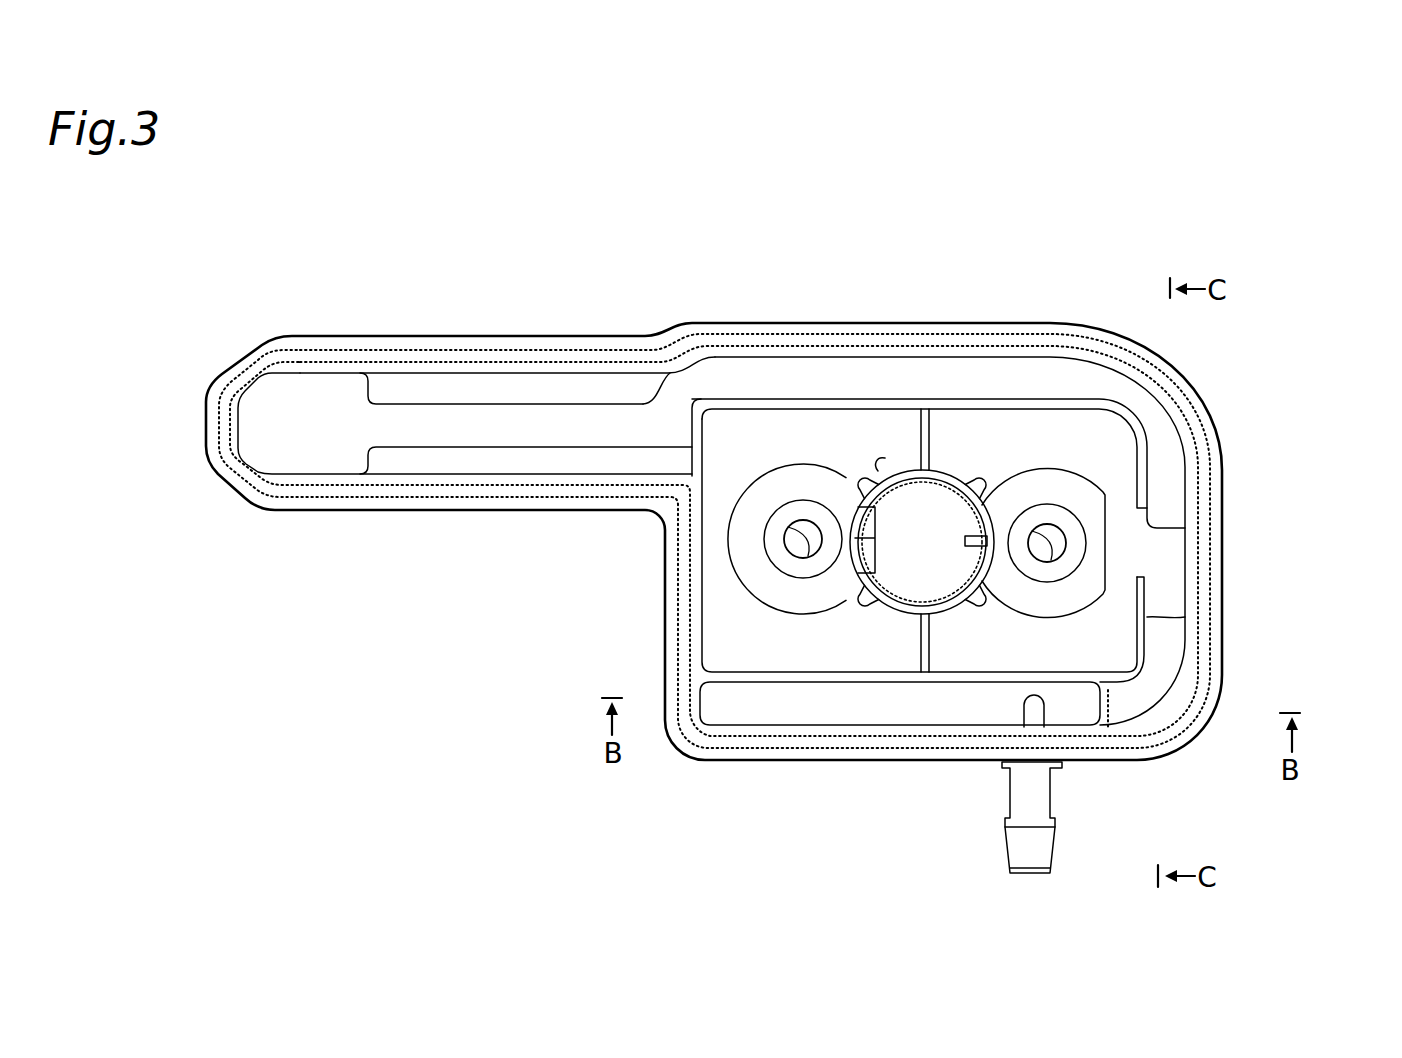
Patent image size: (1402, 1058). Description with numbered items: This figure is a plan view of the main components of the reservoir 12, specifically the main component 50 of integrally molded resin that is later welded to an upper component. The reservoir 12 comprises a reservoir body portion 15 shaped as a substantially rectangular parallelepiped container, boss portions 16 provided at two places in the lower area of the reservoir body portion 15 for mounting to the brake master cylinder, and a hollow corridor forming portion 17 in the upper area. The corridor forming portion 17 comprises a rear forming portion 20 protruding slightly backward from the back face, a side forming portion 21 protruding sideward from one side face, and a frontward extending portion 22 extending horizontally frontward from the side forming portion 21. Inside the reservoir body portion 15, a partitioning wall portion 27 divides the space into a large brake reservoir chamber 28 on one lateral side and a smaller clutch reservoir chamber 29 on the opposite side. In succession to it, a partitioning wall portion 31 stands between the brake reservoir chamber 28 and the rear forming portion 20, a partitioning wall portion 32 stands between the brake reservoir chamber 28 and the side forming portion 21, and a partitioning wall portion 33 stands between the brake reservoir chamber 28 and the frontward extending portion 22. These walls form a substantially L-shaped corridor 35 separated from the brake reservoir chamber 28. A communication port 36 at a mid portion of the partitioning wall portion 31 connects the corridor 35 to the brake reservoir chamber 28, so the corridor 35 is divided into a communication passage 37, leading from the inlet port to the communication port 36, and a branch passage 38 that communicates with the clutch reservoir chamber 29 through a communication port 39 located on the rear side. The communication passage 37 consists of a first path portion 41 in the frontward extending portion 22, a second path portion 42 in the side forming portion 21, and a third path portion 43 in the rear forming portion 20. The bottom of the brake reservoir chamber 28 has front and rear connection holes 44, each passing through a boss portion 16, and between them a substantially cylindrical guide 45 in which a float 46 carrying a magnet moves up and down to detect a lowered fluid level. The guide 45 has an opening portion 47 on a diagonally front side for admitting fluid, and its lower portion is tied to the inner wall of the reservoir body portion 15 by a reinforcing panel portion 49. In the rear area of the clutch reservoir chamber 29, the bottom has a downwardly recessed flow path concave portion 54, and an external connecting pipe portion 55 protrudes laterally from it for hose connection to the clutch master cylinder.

The reservoir 12 is at (793, 541).
The main component 50 is at (1243, 393).
The reservoir body portion 15 is at (1225, 562).
The boss portions 16 is at (786, 478).
The corridor forming portion 17 is at (561, 328).
The rear forming portion 20 is at (1225, 601).
The side forming portion 21 is at (869, 321).
The frontward extending portion 22 is at (418, 333).
The partitioning wall portion 27 is at (810, 688).
The brake reservoir chamber 28 is at (718, 612).
The clutch reservoir chamber 29 is at (735, 710).
The partitioning wall portion 31 is at (1148, 616).
The partitioning wall portion 32 is at (1022, 398).
The partitioning wall portion 33 is at (725, 420).
The corridor 35 is at (945, 366).
The communication port 36 is at (1185, 522).
The communication passage 37 is at (657, 420).
The branch passage 38 is at (1175, 676).
The communication port 39 is at (1110, 728).
The first path portion 41 is at (490, 415).
The second path portion 42 is at (837, 370).
The third path portion 43 is at (1177, 474).
The connection holes 44 is at (808, 552).
The guide 45 is at (905, 613).
The float 46 is at (882, 597).
The opening portion 47 is at (880, 487).
The reinforcing panel portion 49 is at (938, 437).
The flow path concave portion 54 is at (1040, 716).
The external connecting pipe portion 55 is at (1022, 848).